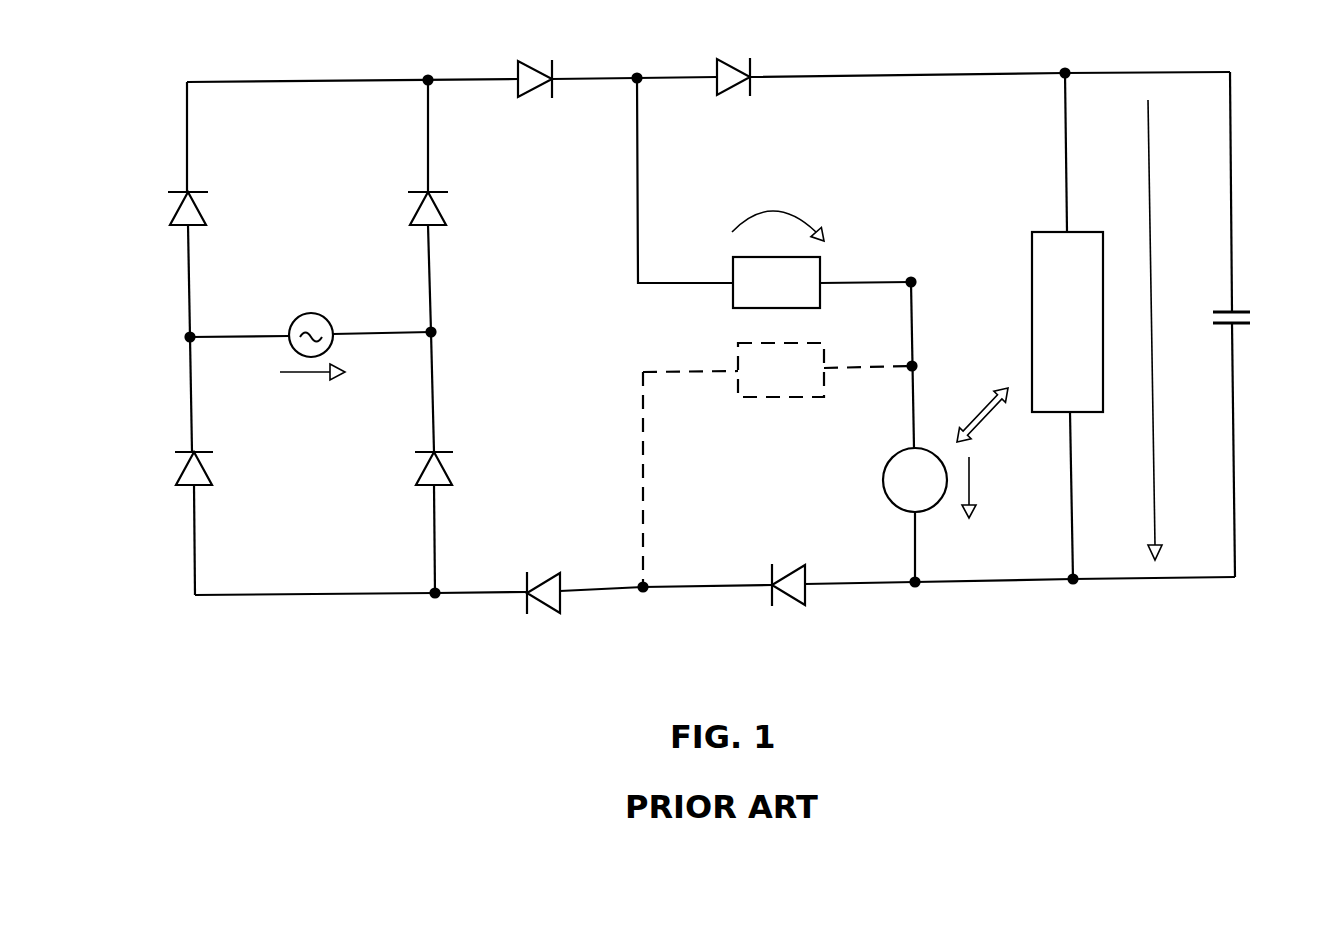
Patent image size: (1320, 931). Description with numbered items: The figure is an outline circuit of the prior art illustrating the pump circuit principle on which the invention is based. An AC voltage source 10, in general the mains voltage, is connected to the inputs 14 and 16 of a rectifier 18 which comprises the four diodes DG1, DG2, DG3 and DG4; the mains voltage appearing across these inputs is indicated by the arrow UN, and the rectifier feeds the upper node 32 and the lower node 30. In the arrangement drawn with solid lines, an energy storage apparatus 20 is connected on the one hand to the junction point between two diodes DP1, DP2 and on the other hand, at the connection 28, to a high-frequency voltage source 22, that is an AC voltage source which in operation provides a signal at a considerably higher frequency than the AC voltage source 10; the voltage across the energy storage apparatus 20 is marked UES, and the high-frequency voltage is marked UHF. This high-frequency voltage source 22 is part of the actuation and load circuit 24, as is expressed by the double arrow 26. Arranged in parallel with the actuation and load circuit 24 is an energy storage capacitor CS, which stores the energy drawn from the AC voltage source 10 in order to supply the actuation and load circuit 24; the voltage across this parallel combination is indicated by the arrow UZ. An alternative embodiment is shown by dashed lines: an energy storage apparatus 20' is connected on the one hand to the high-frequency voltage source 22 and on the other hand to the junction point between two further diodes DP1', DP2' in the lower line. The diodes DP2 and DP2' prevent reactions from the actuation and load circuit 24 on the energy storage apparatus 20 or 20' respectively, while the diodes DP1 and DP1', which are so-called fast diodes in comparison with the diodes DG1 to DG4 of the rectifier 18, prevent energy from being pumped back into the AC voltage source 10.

The AC voltage source 10 is at (311, 319).
The input 14 is at (219, 339).
The input 16 is at (404, 333).
The rectifier 18 is at (708, 62).
The energy storage apparatus 20 is at (776, 282).
The energy storage apparatus 20' is at (778, 467).
The high-frequency voltage source 22 is at (899, 517).
The actuation and load circuit 24 is at (1067, 326).
The double arrow 26 is at (979, 410).
The connection 28 is at (874, 346).
The negative supply node 30 is at (361, 612).
The rectifier output node 32 is at (431, 117).
The diode DG1 is at (221, 208).
The diode DG2 is at (459, 208).
The diode DG3 is at (227, 468).
The diode DG4 is at (465, 468).
The fast diode DP1 is at (533, 62).
The diode DP2 is at (728, 57).
The fast diode DP1' is at (551, 612).
The diode DP2' is at (803, 605).
The energy storage capacitor CS is at (1251, 324).
The mains voltage UN is at (312, 394).
The switch voltage UES is at (778, 211).
The high-frequency voltage UHF is at (994, 487).
The intermediate circuit voltage UZ is at (1171, 330).